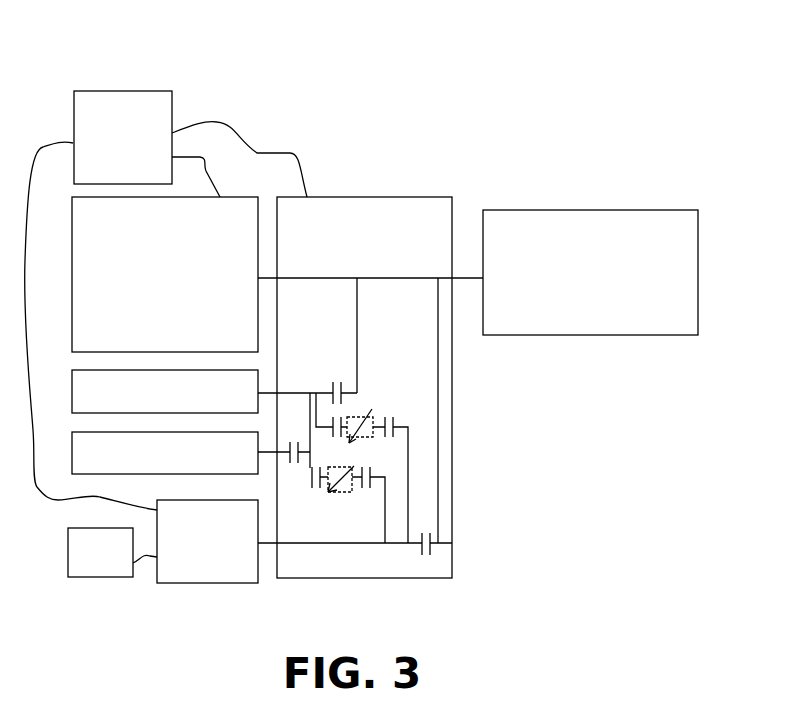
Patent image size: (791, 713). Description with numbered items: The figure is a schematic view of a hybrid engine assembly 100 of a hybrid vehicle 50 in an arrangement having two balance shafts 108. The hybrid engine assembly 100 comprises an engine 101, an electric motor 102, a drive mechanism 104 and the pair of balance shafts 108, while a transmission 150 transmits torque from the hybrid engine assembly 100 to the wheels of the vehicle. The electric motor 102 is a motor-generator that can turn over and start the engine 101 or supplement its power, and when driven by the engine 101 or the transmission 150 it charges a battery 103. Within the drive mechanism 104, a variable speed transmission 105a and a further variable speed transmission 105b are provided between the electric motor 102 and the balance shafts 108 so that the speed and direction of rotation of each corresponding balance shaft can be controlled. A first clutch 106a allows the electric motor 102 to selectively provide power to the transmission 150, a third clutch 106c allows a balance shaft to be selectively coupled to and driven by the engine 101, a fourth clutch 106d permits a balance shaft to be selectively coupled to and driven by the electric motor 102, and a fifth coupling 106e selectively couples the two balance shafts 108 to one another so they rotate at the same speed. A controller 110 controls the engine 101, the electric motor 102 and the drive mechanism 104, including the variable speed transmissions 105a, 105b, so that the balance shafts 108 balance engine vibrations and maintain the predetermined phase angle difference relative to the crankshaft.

The hybrid vehicle 50 is at (572, 60).
The hybrid engine assembly 100 is at (395, 113).
The engine 101 is at (122, 307).
The electric motor 102 is at (228, 566).
The battery 103 is at (88, 572).
The drive mechanism 104 is at (398, 196).
The variable speed transmission 105a is at (344, 490).
The further variable speed transmission 105b is at (391, 391).
The first clutch 106a is at (394, 423).
The third clutch 106c is at (332, 382).
The fourth clutch 106d is at (375, 473).
The fifth coupling 106e is at (301, 469).
The balance shaft 108 is at (132, 411).
The controller 110 is at (108, 157).
The transmission 150 is at (578, 290).